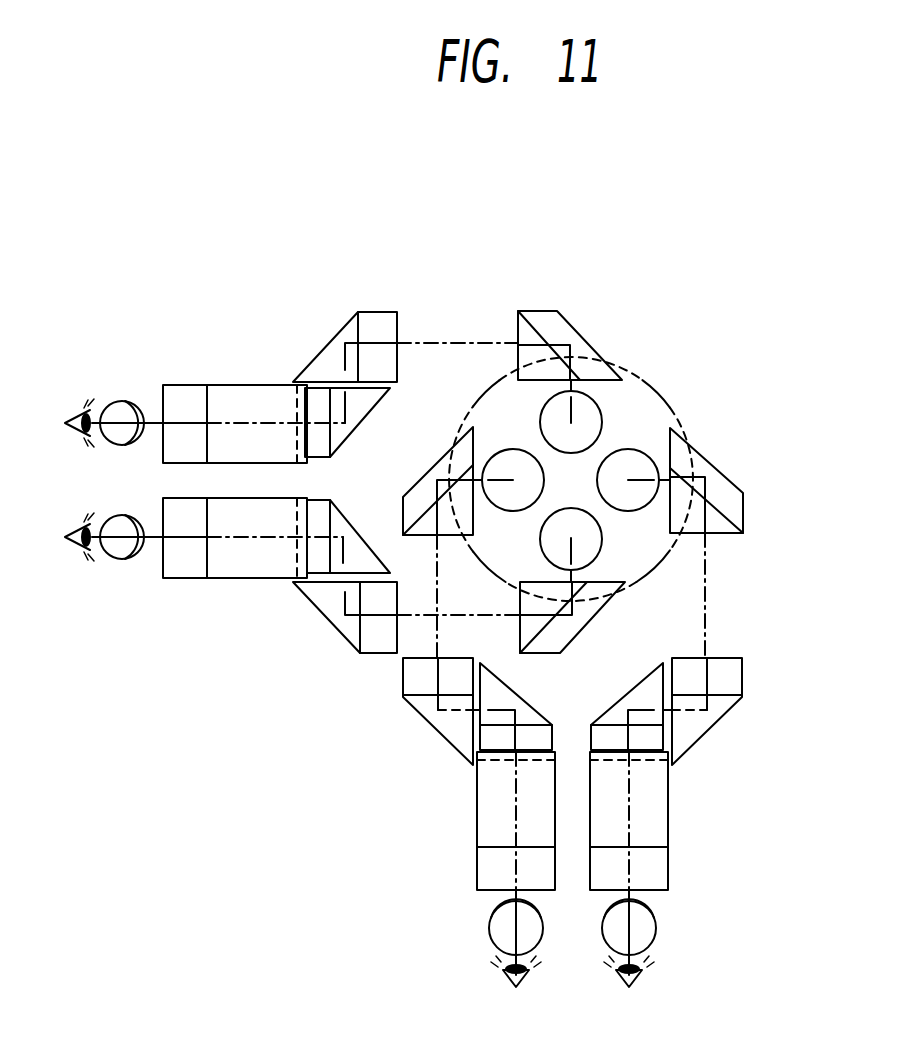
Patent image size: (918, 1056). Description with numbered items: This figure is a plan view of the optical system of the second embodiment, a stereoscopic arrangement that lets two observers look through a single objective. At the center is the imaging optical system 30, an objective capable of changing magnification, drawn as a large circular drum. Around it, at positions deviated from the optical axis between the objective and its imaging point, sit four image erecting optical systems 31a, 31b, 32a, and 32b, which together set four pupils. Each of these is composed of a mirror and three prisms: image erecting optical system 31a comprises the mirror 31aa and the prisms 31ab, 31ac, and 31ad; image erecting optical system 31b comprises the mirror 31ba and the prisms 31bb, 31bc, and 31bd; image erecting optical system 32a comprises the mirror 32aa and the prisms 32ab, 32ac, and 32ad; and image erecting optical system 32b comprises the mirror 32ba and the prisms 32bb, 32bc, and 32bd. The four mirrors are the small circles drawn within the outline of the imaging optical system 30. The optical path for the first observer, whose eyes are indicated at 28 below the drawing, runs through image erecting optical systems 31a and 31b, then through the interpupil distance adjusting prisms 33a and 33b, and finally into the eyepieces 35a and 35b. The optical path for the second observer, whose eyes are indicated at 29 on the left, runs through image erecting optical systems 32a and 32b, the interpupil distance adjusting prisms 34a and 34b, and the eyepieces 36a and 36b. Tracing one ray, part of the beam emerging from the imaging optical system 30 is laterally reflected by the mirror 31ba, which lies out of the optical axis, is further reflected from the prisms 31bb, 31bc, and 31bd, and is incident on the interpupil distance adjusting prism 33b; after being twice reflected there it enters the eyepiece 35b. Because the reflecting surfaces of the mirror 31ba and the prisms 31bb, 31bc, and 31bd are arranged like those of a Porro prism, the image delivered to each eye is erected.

The observer's eyes (rear) 28 is at (620, 977).
The observer's eyes (front) 29 is at (80, 538).
The imaging optical system 30 is at (652, 397).
The image erecting optical system 31a is at (447, 636).
The mirror 31aa is at (508, 502).
The prism 31ab is at (418, 487).
The prism 31ac is at (423, 712).
The prism 31ad is at (518, 700).
The image erecting optical system 31b is at (699, 609).
The mirror 31ba is at (638, 507).
The prism 31bb is at (733, 492).
The prism 31bc is at (732, 675).
The prism 31bd is at (628, 700).
The image erecting optical system 32a is at (463, 335).
The mirror 32aa is at (545, 412).
The prism 32ab is at (557, 310).
The prism 32ac is at (375, 315).
The prism 32ad is at (368, 400).
The image erecting optical system 32b is at (466, 627).
The mirror 32ba is at (545, 550).
The prism 32bb is at (587, 612).
The prism 32bc is at (333, 617).
The prism 32bd is at (340, 520).
The interpupil distance adjusting prism 33a is at (480, 835).
The interpupil distance adjusting prism 33b is at (657, 820).
The interpupil distance adjusting prism 34a is at (192, 392).
The interpupil distance adjusting prism 34b is at (193, 570).
The eyepiece 35a is at (493, 932).
The eyepiece 35b is at (647, 932).
The eyepiece 36a is at (125, 395).
The eyepiece 36b is at (122, 557).